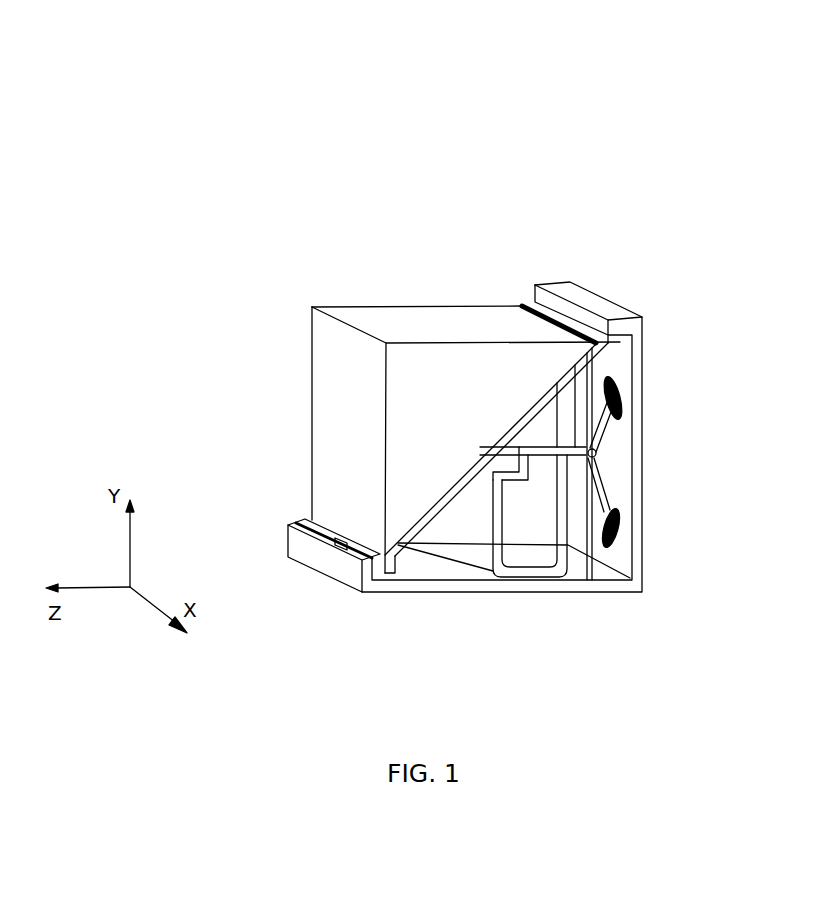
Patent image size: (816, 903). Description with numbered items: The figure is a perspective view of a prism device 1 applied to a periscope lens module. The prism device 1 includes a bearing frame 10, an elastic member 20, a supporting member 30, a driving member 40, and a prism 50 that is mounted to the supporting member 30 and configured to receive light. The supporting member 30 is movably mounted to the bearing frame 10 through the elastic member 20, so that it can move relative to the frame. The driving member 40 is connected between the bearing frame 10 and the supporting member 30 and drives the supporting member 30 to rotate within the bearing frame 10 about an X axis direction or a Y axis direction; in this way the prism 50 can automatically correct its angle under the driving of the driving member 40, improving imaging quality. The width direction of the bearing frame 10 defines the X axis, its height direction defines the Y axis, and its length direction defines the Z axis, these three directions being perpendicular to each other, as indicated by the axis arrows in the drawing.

The prism device 1 is at (512, 53).
The bearing frame 10 is at (618, 545).
The elastic member 20 is at (496, 552).
The supporting member 30 is at (404, 533).
The driving member 40 is at (593, 441).
The prism 50 is at (495, 322).